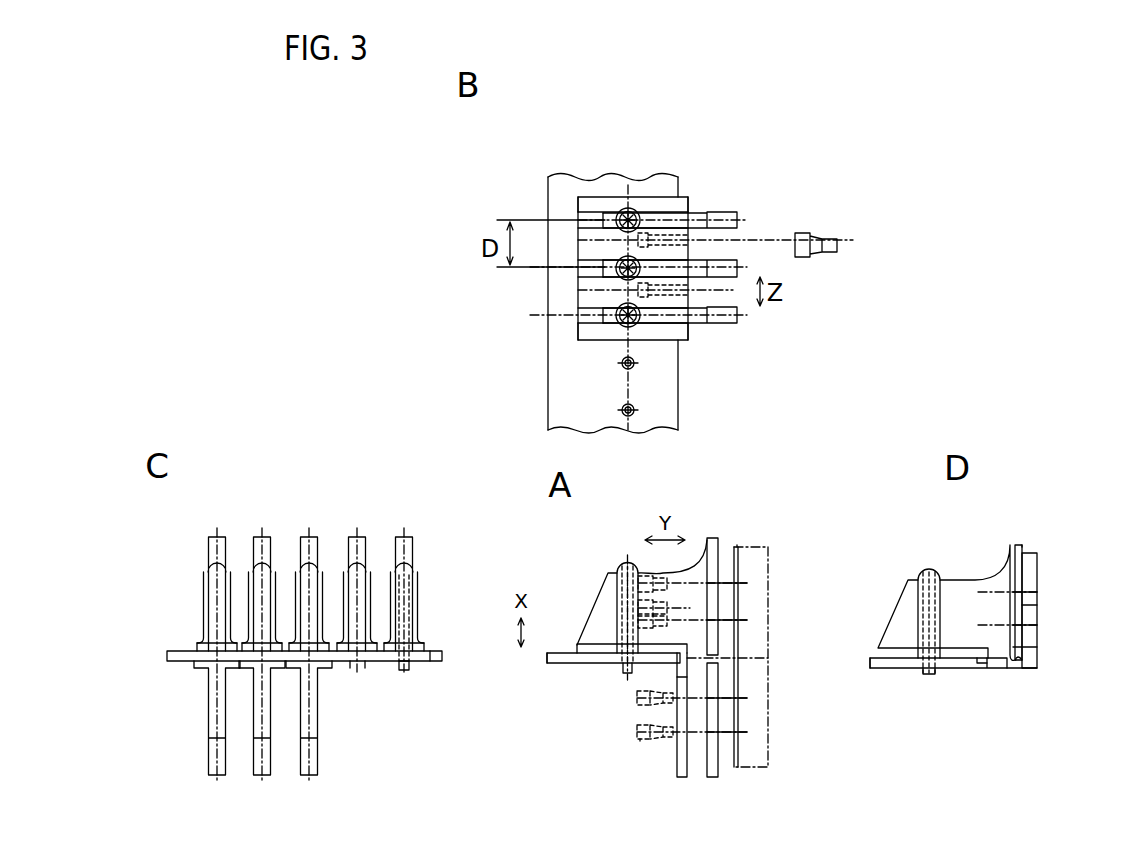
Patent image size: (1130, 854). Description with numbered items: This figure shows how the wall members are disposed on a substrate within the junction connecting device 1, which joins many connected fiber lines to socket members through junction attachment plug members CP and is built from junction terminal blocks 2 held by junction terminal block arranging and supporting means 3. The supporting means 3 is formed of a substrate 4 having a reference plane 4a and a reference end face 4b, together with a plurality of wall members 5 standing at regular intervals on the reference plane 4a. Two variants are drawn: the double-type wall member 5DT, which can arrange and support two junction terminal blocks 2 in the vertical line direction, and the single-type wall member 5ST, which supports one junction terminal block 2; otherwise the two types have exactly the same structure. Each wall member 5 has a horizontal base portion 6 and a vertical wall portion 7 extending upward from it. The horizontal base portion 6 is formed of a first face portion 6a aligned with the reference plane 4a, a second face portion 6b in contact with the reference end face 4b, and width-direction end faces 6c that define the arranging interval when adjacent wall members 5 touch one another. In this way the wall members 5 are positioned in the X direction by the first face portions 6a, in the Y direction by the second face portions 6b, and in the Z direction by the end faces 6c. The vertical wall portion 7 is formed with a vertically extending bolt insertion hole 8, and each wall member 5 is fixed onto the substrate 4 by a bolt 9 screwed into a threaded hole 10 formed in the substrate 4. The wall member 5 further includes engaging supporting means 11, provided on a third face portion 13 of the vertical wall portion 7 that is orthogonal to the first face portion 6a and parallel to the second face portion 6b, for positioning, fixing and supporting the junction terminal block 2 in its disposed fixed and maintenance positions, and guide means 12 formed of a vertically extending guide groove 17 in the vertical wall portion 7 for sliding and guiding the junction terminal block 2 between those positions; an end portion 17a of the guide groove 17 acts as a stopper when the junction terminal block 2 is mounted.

The junction connecting device 1 is at (737, 817).
The junction terminal block 2 is at (778, 574).
The junction terminal block arranging and supporting means 3 is at (692, 749).
The substrate 4 is at (557, 390).
The reference plane 4a is at (435, 650).
The reference end face 4b is at (690, 655).
The wall member 5 is at (655, 205).
The double-type wall member 5DT is at (744, 539).
The single-type wall member 5ST is at (1036, 538).
The horizontal base portion 6 is at (582, 283).
The first face portion 6a is at (357, 668).
The second face portion 6b is at (678, 670).
The width-direction end face 6c is at (585, 197).
The vertical wall portion 7 is at (592, 318).
The bolt insertion hole 8 is at (935, 600).
The bolt 9 is at (622, 208).
The threaded hole 10 is at (637, 405).
The engaging supporting means 11 is at (746, 614).
The guide means 12 is at (730, 722).
The third face portion 13 is at (739, 213).
The guide groove 17 is at (715, 538).
The end portion of guide groove 17a is at (1022, 662).
The junction attachment plug member CP is at (640, 741).